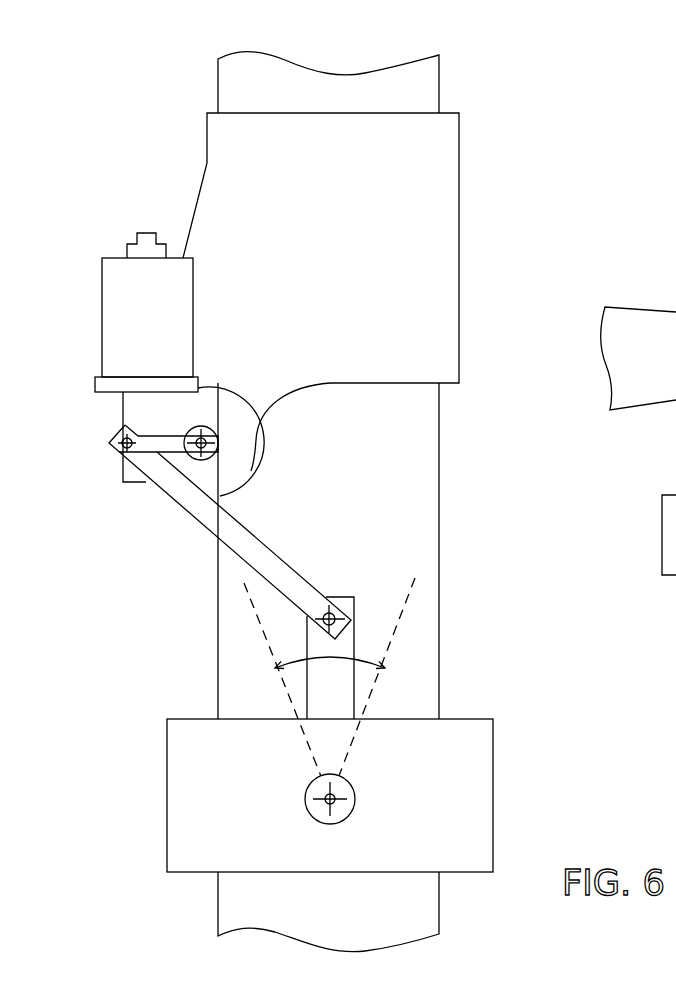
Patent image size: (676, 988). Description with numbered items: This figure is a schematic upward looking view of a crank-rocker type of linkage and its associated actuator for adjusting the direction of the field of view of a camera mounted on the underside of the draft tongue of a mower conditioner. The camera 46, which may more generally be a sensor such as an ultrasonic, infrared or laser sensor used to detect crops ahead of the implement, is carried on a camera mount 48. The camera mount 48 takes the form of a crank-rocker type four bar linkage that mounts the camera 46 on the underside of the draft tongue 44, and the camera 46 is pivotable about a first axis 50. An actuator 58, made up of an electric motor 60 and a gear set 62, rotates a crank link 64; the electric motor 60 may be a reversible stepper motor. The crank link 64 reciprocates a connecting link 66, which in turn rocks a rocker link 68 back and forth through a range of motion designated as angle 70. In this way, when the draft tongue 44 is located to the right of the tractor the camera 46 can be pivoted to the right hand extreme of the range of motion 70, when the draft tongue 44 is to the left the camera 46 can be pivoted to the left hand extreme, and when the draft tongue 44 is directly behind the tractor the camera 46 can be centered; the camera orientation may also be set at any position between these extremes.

The draft tongue 44 is at (632, 330).
The camera 46 is at (200, 797).
The camera mount 48 is at (258, 457).
The first axis 50 is at (333, 805).
The actuator 58 is at (235, 317).
The electric motor 60 is at (127, 307).
The gear set 62 is at (242, 458).
The crank link 64 is at (157, 453).
The connecting link 66 is at (183, 490).
The rocker link 68 is at (330, 735).
The range of motion 70 is at (366, 657).